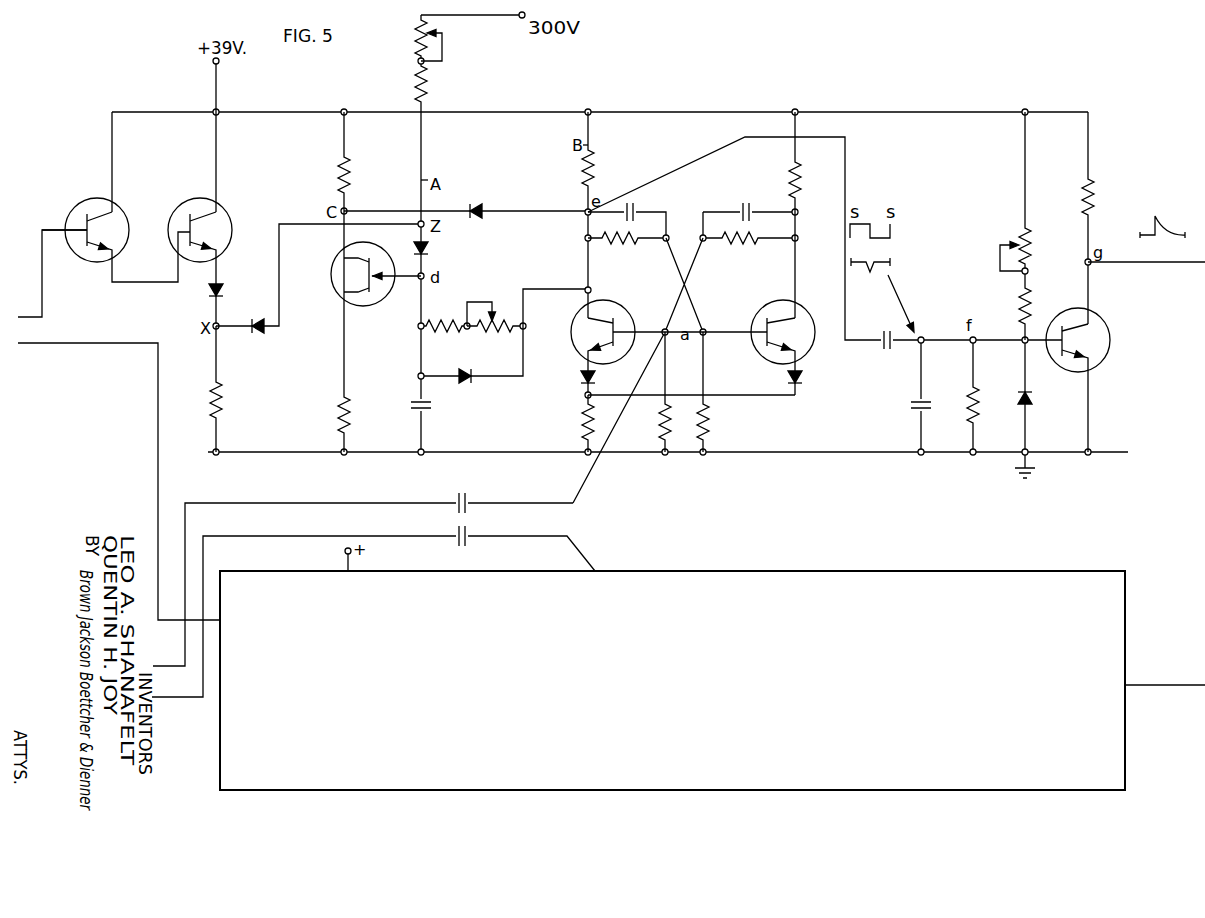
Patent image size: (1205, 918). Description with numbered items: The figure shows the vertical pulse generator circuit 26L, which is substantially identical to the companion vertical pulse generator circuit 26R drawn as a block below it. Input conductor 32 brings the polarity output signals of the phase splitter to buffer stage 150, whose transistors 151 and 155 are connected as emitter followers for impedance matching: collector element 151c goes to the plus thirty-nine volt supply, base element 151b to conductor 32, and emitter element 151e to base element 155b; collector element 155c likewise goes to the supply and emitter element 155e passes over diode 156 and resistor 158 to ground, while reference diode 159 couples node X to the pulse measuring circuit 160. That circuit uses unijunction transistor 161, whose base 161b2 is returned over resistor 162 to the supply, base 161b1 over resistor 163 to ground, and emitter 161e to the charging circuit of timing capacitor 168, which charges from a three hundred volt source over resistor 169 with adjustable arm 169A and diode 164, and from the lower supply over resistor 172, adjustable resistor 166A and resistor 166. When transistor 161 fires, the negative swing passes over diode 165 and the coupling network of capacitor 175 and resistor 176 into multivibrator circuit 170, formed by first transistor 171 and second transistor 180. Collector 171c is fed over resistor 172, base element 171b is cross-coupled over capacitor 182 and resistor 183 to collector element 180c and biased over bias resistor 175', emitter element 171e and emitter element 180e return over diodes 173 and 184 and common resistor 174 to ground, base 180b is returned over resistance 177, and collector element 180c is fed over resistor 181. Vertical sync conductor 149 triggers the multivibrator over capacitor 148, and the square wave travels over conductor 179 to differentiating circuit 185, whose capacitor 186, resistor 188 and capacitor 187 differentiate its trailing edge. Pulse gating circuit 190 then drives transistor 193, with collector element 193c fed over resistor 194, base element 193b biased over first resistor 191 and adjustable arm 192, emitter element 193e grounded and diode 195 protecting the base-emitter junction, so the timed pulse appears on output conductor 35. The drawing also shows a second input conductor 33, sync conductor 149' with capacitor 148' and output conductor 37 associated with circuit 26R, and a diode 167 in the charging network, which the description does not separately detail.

The vertical pulse generator circuit 26L is at (774, 61).
The vertical pulse generator circuit 26R is at (672, 680).
The input conductor 32 is at (52, 273).
The input lead 33 is at (44, 342).
The output conductor 35 is at (1190, 265).
The output lead 37 is at (1186, 683).
The capacitor 148 is at (516, 491).
The coupling capacitor 148' is at (527, 541).
The vertical sync conductor 149 is at (304, 569).
The coupling lead 149' is at (304, 604).
The buffer stage 150 is at (151, 162).
The transistor 151 is at (116, 206).
The base element 151b is at (76, 205).
The collector element 151c is at (108, 216).
The emitter element 151e is at (103, 253).
The transistor 155 is at (223, 208).
The base element 155b is at (180, 212).
The collector element 155c is at (214, 216).
The emitter element 155e is at (212, 250).
The diode 156 is at (222, 291).
The resistor 158 is at (219, 392).
The reference diode 159 is at (258, 334).
The pulse measuring circuit 160 is at (548, 150).
The unijunction transistor 161 is at (377, 254).
The base 161b1 is at (344, 293).
The base 161b2 is at (344, 260).
The emitter 161e is at (382, 291).
The resistor 162 is at (349, 176).
The resistor 163 is at (349, 408).
The diode 164 is at (428, 248).
The diode 165 is at (478, 208).
The resistor 166 is at (455, 324).
The adjustable resistor 166A is at (506, 294).
The diode 167 is at (466, 370).
The timing capacitor 168 is at (432, 410).
The resistor 169 is at (418, 62).
The adjustable arm 169A is at (442, 38).
The multivibrator circuit 170 is at (740, 134).
The first transistor 171 is at (604, 302).
The base element 171b is at (615, 319).
The collector 171c is at (585, 316).
The emitter element 171e is at (582, 347).
The resistor 172 is at (594, 178).
The diode 173 is at (578, 376).
The common resistor 174 is at (583, 424).
The capacitor 175 is at (631, 213).
The bias resistor 175' is at (650, 392).
The resistor 176 is at (628, 250).
The resistance 177 is at (707, 424).
The conductor 179 is at (845, 188).
The second transistor 180 is at (778, 302).
The base 180b is at (752, 326).
The collector element 180c is at (798, 320).
The emitter element 180e is at (805, 356).
The resistor 181 is at (800, 180).
The capacitor 182 is at (746, 203).
The resistor 183 is at (749, 239).
The diode 184 is at (800, 380).
The differentiating circuit 185 is at (935, 161).
The capacitor 186 is at (877, 329).
The capacitor 187 is at (908, 405).
The resistor 188 is at (968, 402).
The pulse gating circuit 190 is at (1115, 92).
The first resistor 191 is at (1019, 300).
The adjustable arm 192 is at (1017, 234).
The transistor 193 is at (1104, 327).
The base element 193b is at (1052, 353).
The collector element 193c is at (1074, 318).
The emitter element 193e is at (1093, 356).
The resistor 194 is at (1082, 198).
The diode 195 is at (1020, 398).